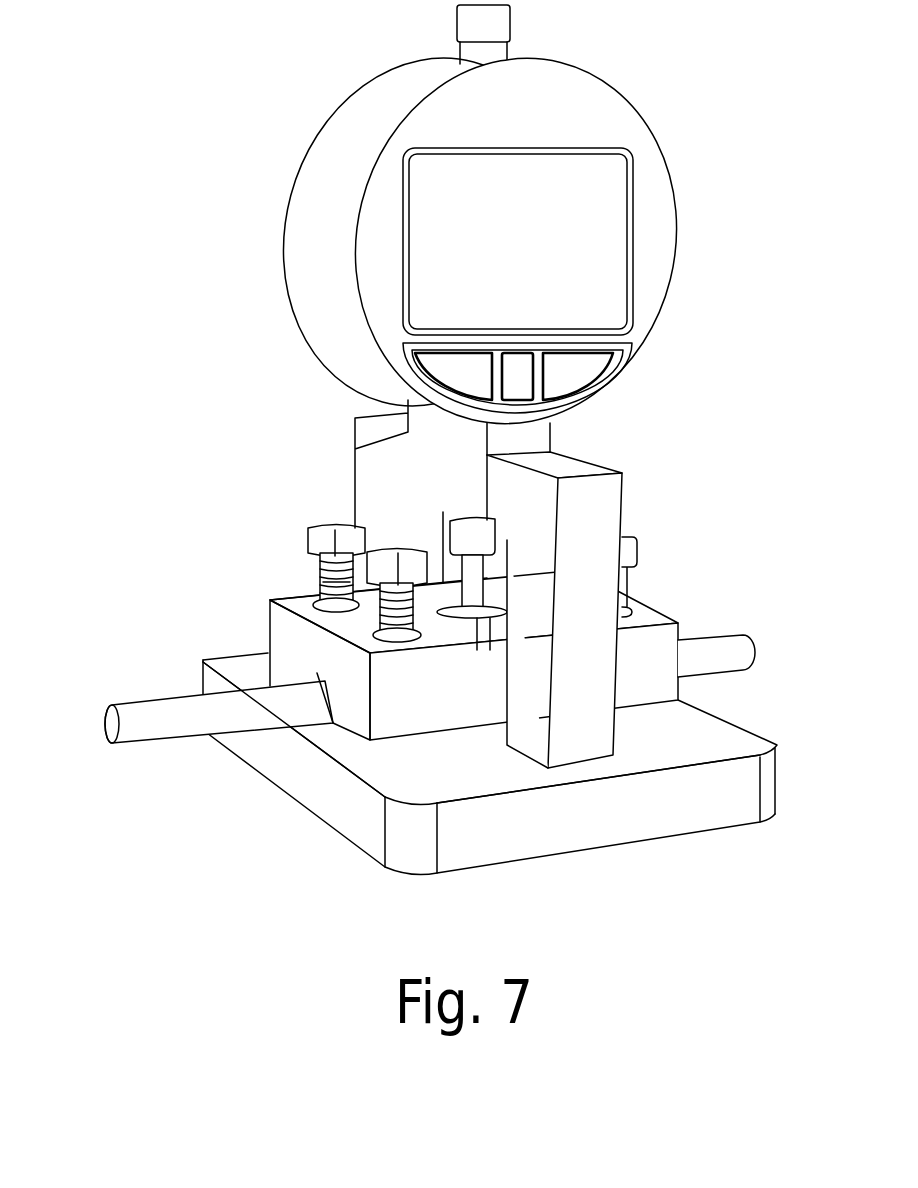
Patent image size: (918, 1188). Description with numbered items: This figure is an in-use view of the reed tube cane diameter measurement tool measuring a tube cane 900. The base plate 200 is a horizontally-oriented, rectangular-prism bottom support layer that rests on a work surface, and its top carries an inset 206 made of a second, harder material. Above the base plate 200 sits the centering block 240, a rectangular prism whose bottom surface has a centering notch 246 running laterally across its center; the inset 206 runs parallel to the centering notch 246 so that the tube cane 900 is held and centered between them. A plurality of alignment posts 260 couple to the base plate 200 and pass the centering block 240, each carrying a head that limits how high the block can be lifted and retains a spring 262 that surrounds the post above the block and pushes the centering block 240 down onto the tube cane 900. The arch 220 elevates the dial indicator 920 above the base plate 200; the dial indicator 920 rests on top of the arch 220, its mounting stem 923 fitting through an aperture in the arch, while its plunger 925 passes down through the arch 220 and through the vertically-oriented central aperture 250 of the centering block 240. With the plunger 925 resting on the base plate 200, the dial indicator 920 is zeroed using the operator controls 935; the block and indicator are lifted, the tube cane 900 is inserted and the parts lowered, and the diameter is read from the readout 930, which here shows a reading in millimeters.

The base plate 200 is at (313, 807).
The inset 206 is at (283, 725).
The arch 220 is at (388, 458).
The centering block 240 is at (297, 633).
The centering notch 246 is at (323, 684).
The central aperture 250 is at (513, 778).
The alignment posts 260 is at (405, 550).
The spring 262 is at (323, 582).
The tube cane 900 is at (140, 698).
The dial indicator 920 is at (600, 137).
The mounting stem 923 is at (465, 543).
The plunger 925 is at (473, 590).
The readout 930 is at (633, 228).
The operator controls 935 is at (638, 347).